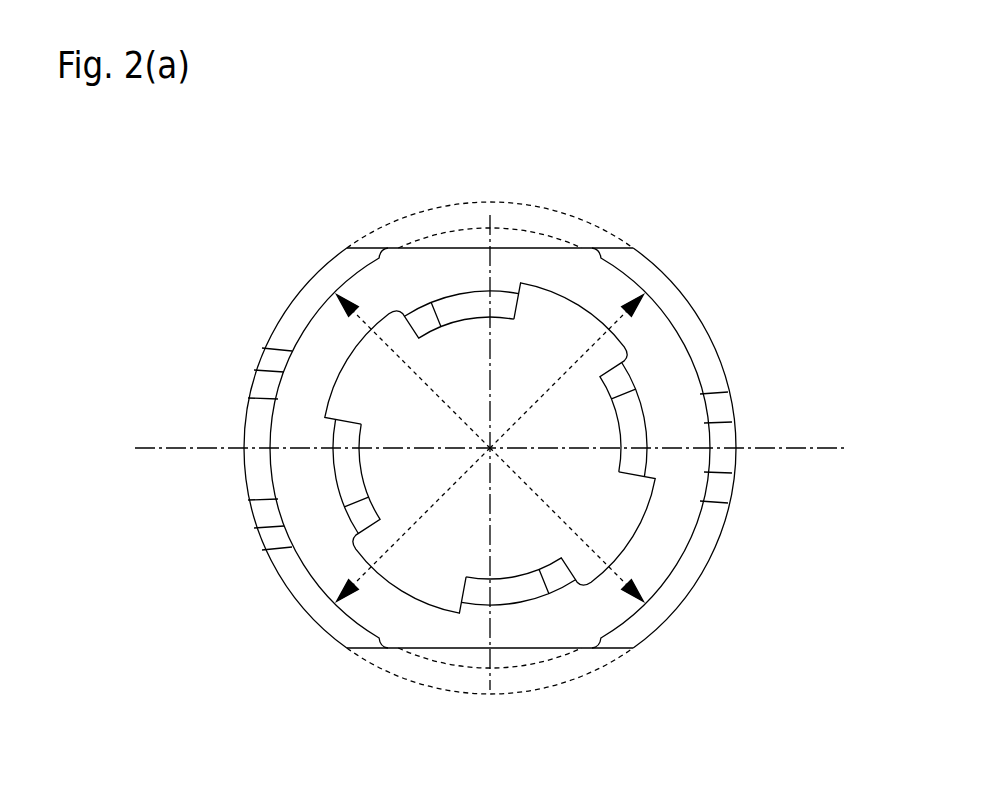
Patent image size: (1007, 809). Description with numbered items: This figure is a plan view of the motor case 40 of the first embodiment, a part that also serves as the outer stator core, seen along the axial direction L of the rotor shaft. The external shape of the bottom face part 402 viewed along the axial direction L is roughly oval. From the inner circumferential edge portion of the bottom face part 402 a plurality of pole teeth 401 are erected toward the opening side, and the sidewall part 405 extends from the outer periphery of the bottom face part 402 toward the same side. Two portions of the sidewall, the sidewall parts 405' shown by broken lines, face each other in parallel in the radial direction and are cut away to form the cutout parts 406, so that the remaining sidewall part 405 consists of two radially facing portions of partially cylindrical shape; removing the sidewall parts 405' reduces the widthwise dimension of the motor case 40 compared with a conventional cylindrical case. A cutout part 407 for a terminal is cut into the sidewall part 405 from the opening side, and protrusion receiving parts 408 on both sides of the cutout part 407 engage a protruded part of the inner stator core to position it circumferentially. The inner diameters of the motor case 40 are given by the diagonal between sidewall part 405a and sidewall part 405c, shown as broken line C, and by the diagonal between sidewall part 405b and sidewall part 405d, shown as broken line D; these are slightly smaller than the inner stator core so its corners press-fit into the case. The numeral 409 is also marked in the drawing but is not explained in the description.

The motor case 40 is at (765, 105).
The pole teeth 401 is at (525, 592).
The bottom face part 402 is at (533, 272).
The sidewall part 405 is at (473, 448).
The sidewall parts 405' is at (494, 452).
The sidewall part 405a is at (687, 305).
The sidewall part 405b is at (697, 580).
The sidewall part 405c is at (288, 598).
The sidewall part 405d is at (282, 318).
The cutout parts 406 is at (410, 237).
The cutout part for terminal 407 is at (250, 462).
The protrusion receiving parts 408 is at (268, 360).
The outer corner of flat cut portion 409 is at (362, 241).
The inner diameter dimension C is at (632, 268).
The inner diameter dimension D is at (655, 597).
The axial direction L is at (490, 447).